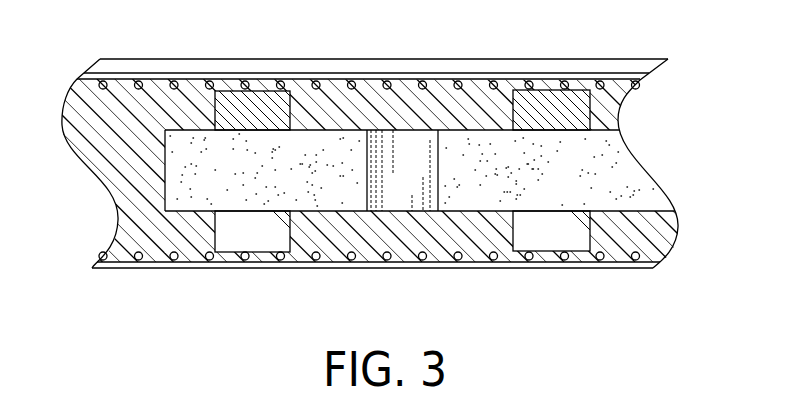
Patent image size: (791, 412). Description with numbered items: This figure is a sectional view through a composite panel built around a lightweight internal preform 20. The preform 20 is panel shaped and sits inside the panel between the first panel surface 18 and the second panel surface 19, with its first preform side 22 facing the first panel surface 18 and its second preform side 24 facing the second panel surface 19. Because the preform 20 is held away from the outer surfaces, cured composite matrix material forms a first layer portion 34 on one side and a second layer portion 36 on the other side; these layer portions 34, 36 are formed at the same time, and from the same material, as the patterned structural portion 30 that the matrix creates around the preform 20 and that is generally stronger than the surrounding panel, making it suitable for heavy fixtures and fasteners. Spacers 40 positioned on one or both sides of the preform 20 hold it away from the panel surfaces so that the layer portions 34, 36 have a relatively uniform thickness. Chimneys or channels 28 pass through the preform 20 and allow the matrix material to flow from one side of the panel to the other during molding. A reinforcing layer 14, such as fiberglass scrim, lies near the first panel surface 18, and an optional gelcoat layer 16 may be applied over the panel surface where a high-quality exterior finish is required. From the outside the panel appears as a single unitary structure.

The reinforcing layer 14 is at (637, 84).
The gelcoat layer 16 is at (100, 67).
The first panel surface 18 is at (655, 56).
The second panel surface 19 is at (642, 272).
The internal preform 20 is at (652, 195).
The first preform side 22 is at (167, 133).
The second preform side 24 is at (163, 205).
The channel 28 is at (405, 143).
The patterned structural portion 30 is at (117, 172).
The first layer portion 34 is at (334, 98).
The second layer portion 36 is at (485, 245).
The spacer 40 is at (580, 100).